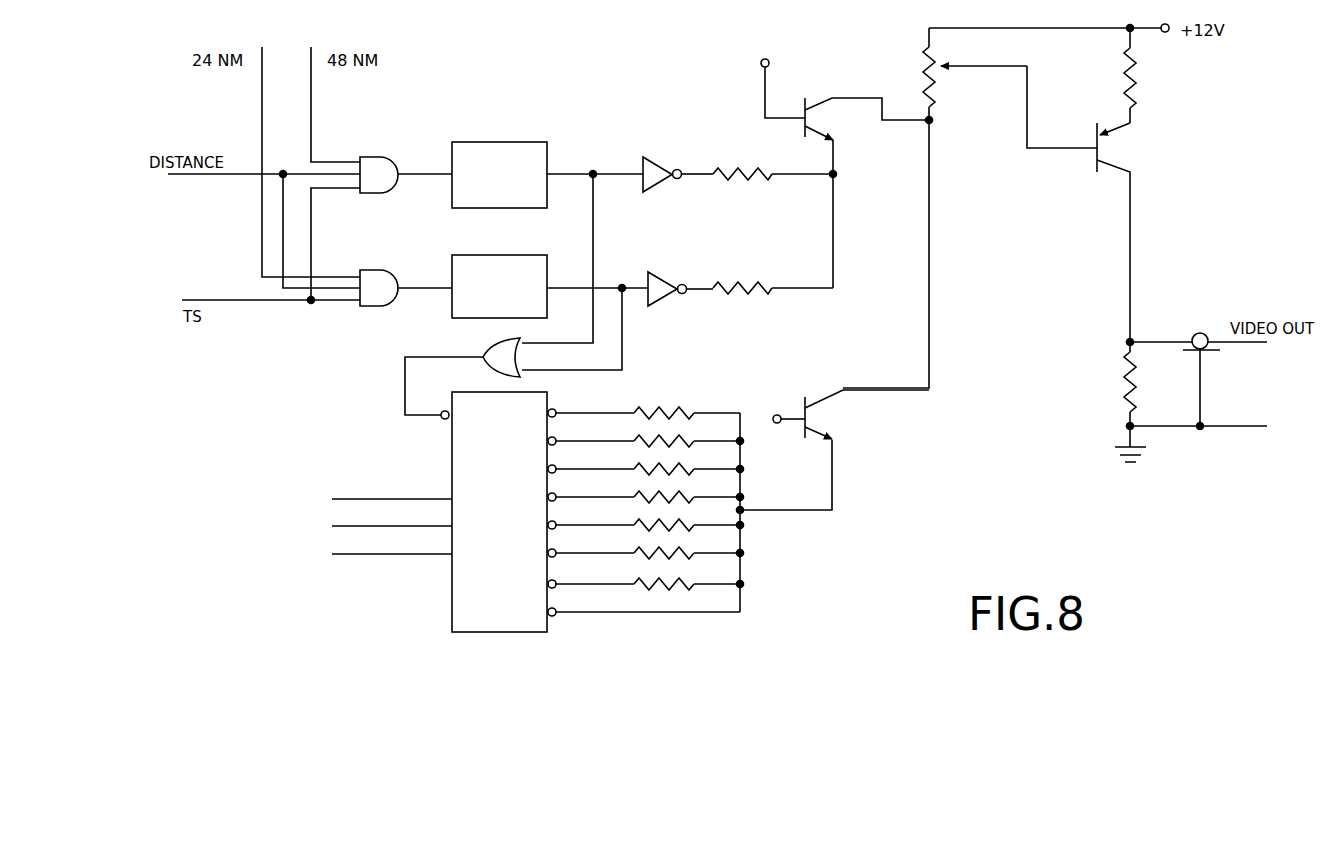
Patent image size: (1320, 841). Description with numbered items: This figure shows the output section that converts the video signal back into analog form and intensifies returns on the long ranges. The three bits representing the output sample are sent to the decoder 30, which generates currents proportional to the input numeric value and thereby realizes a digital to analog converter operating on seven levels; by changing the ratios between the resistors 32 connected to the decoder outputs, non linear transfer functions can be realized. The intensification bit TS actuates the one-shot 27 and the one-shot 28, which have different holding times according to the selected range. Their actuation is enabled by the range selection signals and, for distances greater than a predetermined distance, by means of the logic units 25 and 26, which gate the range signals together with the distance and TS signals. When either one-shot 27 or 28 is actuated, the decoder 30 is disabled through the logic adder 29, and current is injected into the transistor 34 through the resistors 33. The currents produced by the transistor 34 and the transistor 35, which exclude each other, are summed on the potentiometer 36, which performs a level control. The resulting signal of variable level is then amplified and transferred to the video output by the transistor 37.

The logic unit 25 is at (383, 183).
The logic unit 26 is at (383, 297).
The one-shot 27 is at (481, 142).
The one-shot 28 is at (483, 255).
The logic adder 29 is at (512, 366).
The decoder 30 is at (510, 594).
The resistors 32 is at (645, 624).
The resistors 33 is at (777, 276).
The transistor 34 is at (660, 190).
The transistor 35 is at (825, 415).
The potentiometer 36 is at (921, 50).
The transistor 37 is at (1110, 151).